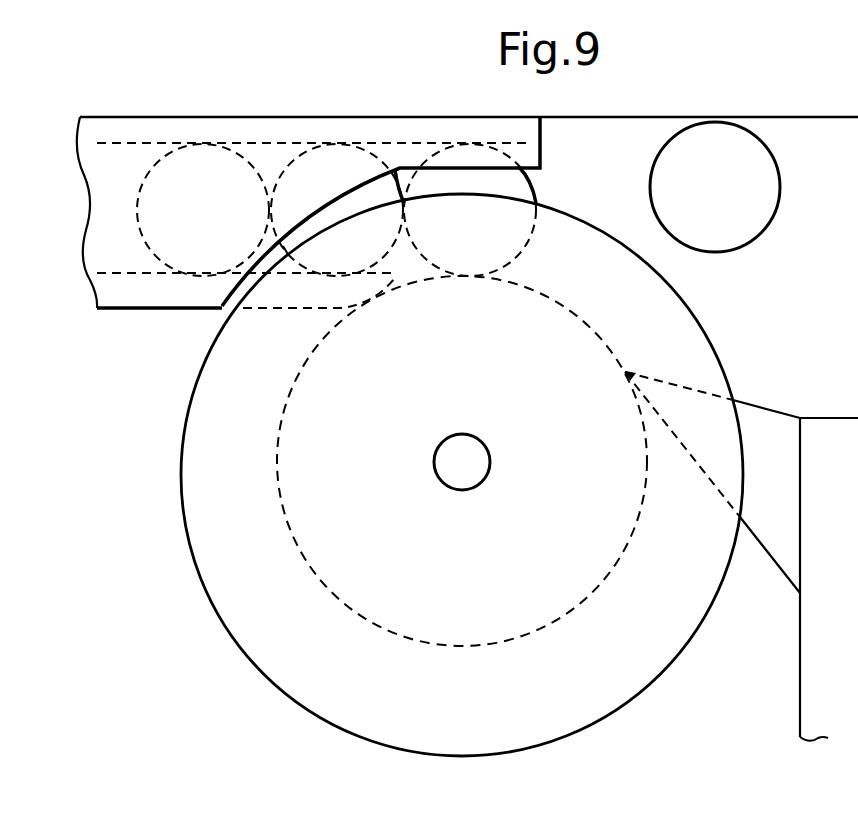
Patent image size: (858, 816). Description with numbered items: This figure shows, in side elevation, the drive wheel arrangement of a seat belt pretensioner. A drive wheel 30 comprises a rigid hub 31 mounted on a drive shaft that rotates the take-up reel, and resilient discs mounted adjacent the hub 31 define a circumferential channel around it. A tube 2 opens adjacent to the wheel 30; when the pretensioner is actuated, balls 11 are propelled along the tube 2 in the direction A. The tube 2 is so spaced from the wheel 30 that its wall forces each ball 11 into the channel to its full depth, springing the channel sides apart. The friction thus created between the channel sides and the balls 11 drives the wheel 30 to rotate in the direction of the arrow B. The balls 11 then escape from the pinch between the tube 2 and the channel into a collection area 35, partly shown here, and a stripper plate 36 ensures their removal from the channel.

The tube 2 is at (168, 118).
The ball 11 is at (430, 160).
The drive wheel 30 is at (270, 698).
The hub 31 is at (317, 538).
The collection area 35 is at (843, 277).
The stripper plate 36 is at (782, 540).
The direction of ball travel A is at (150, 205).
The direction of wheel rotation B is at (573, 417).